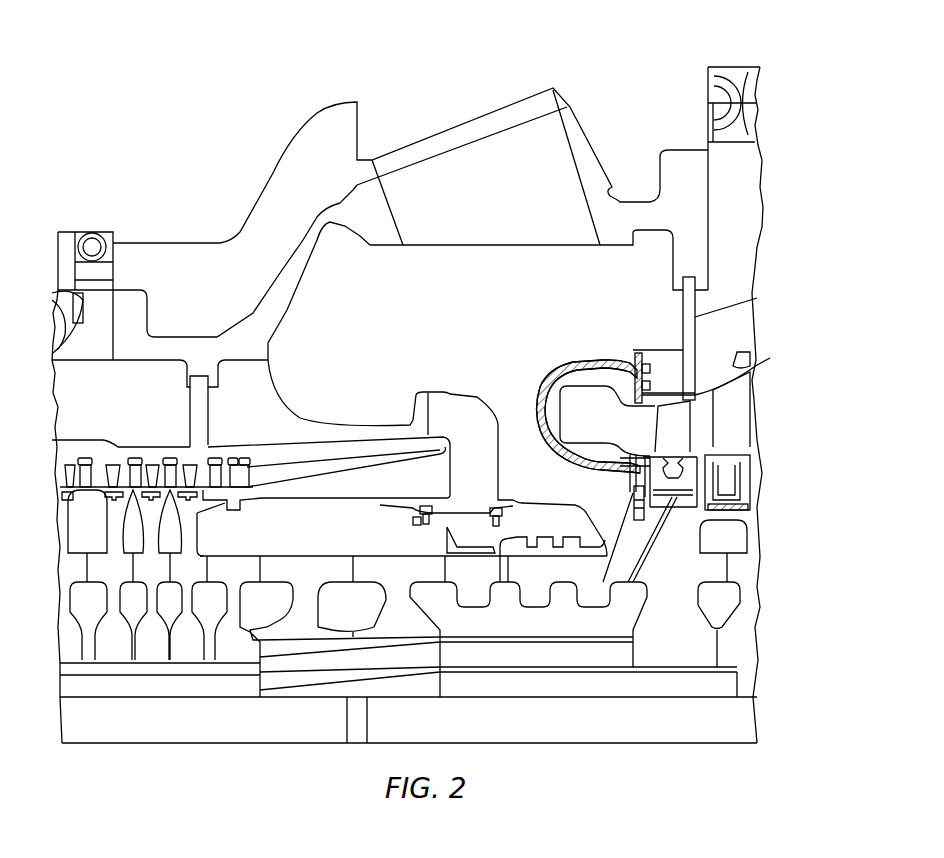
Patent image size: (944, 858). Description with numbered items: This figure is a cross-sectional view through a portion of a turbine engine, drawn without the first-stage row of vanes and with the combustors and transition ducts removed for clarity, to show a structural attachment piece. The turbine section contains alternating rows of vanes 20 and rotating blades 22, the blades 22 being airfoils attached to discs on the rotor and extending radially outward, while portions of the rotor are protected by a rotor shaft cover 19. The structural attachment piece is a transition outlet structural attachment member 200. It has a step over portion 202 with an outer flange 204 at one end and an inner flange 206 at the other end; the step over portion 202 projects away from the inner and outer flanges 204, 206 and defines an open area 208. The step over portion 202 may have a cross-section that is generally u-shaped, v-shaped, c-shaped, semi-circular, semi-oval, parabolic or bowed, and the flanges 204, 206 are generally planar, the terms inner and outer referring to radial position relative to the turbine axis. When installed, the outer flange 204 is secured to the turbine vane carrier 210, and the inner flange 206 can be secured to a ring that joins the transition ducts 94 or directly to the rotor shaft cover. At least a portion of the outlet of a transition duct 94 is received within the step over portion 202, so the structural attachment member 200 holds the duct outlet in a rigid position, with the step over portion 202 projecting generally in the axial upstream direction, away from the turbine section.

The rotor shaft cover 19 is at (593, 455).
The vanes 20 is at (740, 424).
The rotating blades 22 is at (690, 436).
The transition duct 94 is at (597, 457).
The transition outlet structural attachment member 200 is at (558, 360).
The step over portion 202 is at (537, 405).
The outer flange 204 is at (636, 352).
The inner flange 206 is at (643, 490).
The open area 208 is at (597, 366).
The turbine vane carrier 210 is at (697, 372).